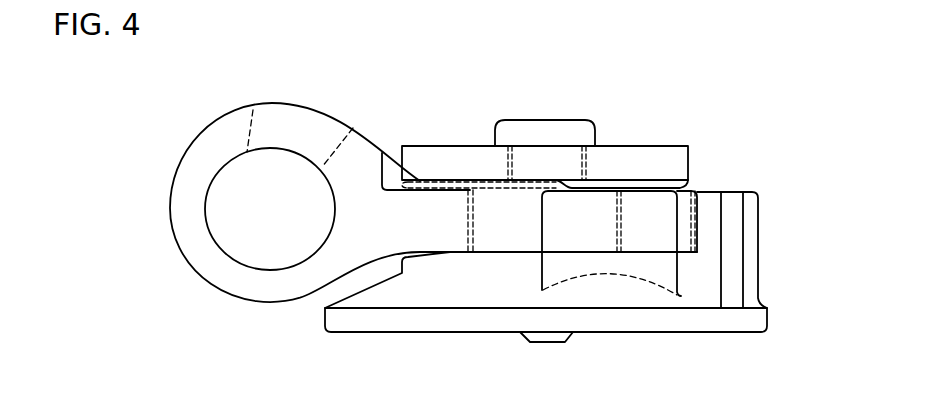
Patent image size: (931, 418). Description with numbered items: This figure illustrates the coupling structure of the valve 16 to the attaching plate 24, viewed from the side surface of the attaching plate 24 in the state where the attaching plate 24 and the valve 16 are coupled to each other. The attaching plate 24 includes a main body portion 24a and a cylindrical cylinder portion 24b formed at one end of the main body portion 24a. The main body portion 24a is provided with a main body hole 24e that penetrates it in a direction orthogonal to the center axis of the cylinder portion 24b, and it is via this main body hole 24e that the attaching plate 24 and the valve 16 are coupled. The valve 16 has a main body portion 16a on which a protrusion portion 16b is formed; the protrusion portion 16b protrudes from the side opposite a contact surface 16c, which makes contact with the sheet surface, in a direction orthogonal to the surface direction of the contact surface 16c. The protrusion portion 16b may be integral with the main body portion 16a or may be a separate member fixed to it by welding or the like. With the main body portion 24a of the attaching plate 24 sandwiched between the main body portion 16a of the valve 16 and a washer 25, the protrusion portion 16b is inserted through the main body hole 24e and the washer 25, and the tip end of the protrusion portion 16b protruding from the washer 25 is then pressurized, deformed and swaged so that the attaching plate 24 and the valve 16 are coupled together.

The attaching plate 24 is at (235, 84).
The main body portion 24a is at (410, 181).
The cylinder portion 24b is at (192, 142).
The main body hole 24e is at (478, 235).
The washer 25 is at (688, 162).
The valve 16 is at (788, 307).
The main body portion 16a is at (767, 318).
The protrusion portion 16b is at (560, 119).
The contact surface 16c is at (708, 333).